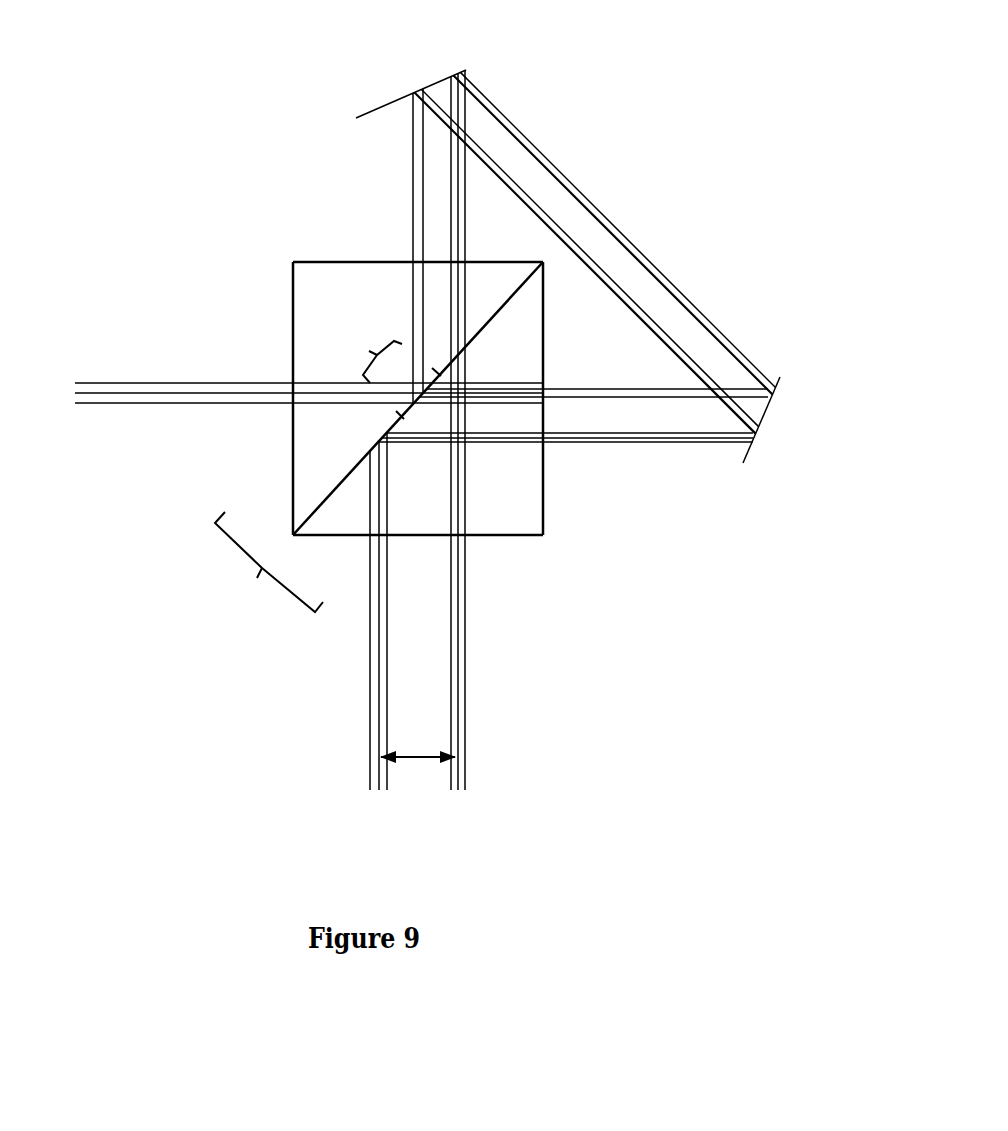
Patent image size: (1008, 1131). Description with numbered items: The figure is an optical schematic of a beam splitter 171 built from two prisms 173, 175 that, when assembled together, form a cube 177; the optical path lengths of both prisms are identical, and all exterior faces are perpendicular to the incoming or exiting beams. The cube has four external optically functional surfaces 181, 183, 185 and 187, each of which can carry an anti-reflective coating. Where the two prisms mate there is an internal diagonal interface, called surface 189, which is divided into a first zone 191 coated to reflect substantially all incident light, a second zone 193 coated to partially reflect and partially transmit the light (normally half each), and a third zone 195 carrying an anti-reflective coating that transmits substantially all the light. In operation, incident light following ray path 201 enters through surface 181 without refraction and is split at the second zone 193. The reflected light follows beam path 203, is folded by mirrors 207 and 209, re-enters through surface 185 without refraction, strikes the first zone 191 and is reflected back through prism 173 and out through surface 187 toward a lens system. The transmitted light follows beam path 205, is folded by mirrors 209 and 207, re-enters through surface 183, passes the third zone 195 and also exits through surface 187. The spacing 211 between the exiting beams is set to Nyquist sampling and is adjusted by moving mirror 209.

The beam splitter 171 is at (165, 170).
The prism 173 is at (483, 432).
The prism 175 is at (312, 307).
The cube 177 is at (269, 565).
The external optically functional surface 181 is at (290, 432).
The external optically functional surface 183 is at (362, 258).
The external optically functional surface 185 is at (545, 500).
The external optically functional surface 187 is at (505, 535).
The internal diagonal interface 189 is at (513, 298).
The first zone 191 is at (370, 447).
The second zone 193 is at (368, 352).
The third zone 195 is at (465, 343).
The ray path 201 is at (135, 404).
The beam path 203 is at (410, 167).
The transmitted beam path 205 is at (672, 398).
The mirror 207 is at (388, 102).
The mirror 209 is at (768, 415).
The spacing 211 is at (424, 762).